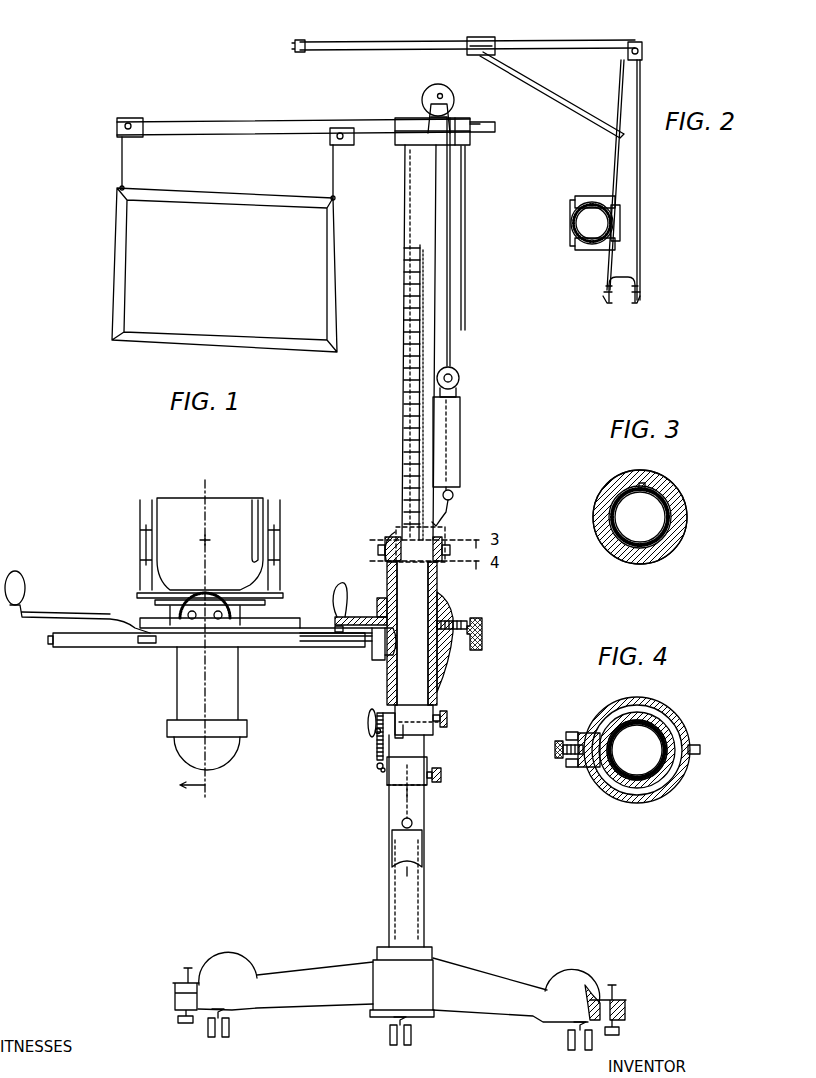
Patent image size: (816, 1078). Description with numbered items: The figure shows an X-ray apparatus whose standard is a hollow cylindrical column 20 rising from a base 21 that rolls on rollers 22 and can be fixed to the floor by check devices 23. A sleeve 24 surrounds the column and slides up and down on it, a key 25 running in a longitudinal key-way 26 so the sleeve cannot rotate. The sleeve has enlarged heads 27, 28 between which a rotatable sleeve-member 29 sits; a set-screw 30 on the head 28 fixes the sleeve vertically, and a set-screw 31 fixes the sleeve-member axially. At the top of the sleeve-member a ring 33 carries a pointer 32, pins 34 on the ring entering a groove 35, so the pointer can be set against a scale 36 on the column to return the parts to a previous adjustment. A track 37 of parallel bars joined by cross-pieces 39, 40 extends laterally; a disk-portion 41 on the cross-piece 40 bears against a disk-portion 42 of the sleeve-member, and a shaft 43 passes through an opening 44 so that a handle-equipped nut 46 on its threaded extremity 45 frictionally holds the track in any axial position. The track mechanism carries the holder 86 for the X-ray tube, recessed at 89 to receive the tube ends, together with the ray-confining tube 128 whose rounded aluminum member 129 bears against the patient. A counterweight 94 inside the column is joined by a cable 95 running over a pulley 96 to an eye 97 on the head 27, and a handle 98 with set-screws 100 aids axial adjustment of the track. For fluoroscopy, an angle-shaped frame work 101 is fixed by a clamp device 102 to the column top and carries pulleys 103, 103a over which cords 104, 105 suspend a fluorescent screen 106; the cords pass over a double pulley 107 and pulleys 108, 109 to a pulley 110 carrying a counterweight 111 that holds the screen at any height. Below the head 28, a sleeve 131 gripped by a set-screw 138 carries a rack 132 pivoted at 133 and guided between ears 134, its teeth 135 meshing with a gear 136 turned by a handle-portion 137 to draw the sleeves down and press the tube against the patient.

In FIG. 2, the column 20 is at (572, 229).
In FIG. 1, the column 20 is at (404, 312).
In FIG. 3, the column 20 is at (672, 520).
In FIG. 4, the column 20 is at (660, 742).
In FIG. 1, the base 21 is at (463, 968).
In FIG. 1, the rollers 22 is at (229, 1028).
In FIG. 1, the check devices 23 is at (175, 1014).
In FIG. 1, the sleeve 24 is at (396, 578).
In FIG. 4, the sleeve 24 is at (665, 740).
In FIG. 3, the key 25 is at (647, 484).
In FIG. 1, the key-way 26 is at (420, 468).
In FIG. 3, the key-way 26 is at (642, 489).
In FIG. 1, the head 27 is at (445, 540).
In FIG. 3, the head 27 is at (676, 500).
In FIG. 1, the head 28 is at (435, 732).
In FIG. 1, the sleeve-member 29 is at (458, 622).
In FIG. 4, the sleeve-member 29 is at (666, 726).
In FIG. 1, the set-screw 30 is at (446, 716).
In FIG. 1, the set-screw 31 is at (480, 642).
In FIG. 1, the pointer 32 is at (400, 530).
In FIG. 1, the ring 33 is at (386, 545).
In FIG. 4, the ring 33 is at (600, 706).
In FIG. 1, the pins 34 is at (378, 550).
In FIG. 4, the pins 34 is at (700, 750).
In FIG. 4, the groove 35 is at (598, 786).
In FIG. 1, the scale 36 is at (410, 449).
In FIG. 1, the track 37 is at (272, 648).
In FIG. 1, the cross-piece 39 is at (50, 646).
In FIG. 1, the cross-piece 40 is at (360, 633).
In FIG. 1, the disk-portion 41 is at (377, 603).
In FIG. 1, the disk-portion 42 is at (376, 650).
In FIG. 1, the shaft 43 is at (398, 610).
In FIG. 1, the opening 44 is at (345, 640).
In FIG. 1, the threaded extremity 45 is at (334, 628).
In FIG. 1, the handle-equipped nut 46 is at (335, 598).
In FIG. 1, the holder 86 is at (198, 498).
In FIG. 1, the recesses 89 is at (258, 505).
In FIG. 1, the counterweight 94 is at (416, 870).
In FIG. 1, the cable 95 is at (455, 503).
In FIG. 1, the pulley 96 is at (421, 97).
In FIG. 1, the eye 97 is at (450, 522).
In FIG. 1, the handle 98 is at (60, 617).
In FIG. 1, the set-screws 100 is at (148, 643).
In FIG. 2, the frame work 101 is at (590, 58).
In FIG. 2, the clamp device 102 is at (592, 200).
In FIG. 2, the pulley 103 is at (486, 34).
In FIG. 2, the pulley 103a is at (300, 40).
In FIG. 1, the cord 104 is at (121, 160).
In FIG. 1, the cord 105 is at (332, 168).
In FIG. 1, the fluorescent screen 106 is at (130, 291).
In FIG. 1, the double pulley 107 is at (482, 128).
In FIG. 2, the pulley 108 is at (605, 296).
In FIG. 2, the pulley 109 is at (636, 296).
In FIG. 1, the pulley 110 is at (460, 376).
In FIG. 1, the counterweight 111 is at (458, 410).
In FIG. 1, the ray-confining tube 128 is at (177, 692).
In FIG. 1, the member 129 is at (188, 757).
In FIG. 1, the sleeve 131 is at (428, 766).
In FIG. 1, the rack 132 is at (377, 762).
In FIG. 1, the pivotal connection 133 is at (382, 774).
In FIG. 1, the ears 134 is at (385, 710).
In FIG. 1, the teeth 135 is at (376, 742).
In FIG. 1, the gear 136 is at (375, 730).
In FIG. 1, the handle-portion 137 is at (368, 712).
In FIG. 1, the set-screw 138 is at (442, 778).